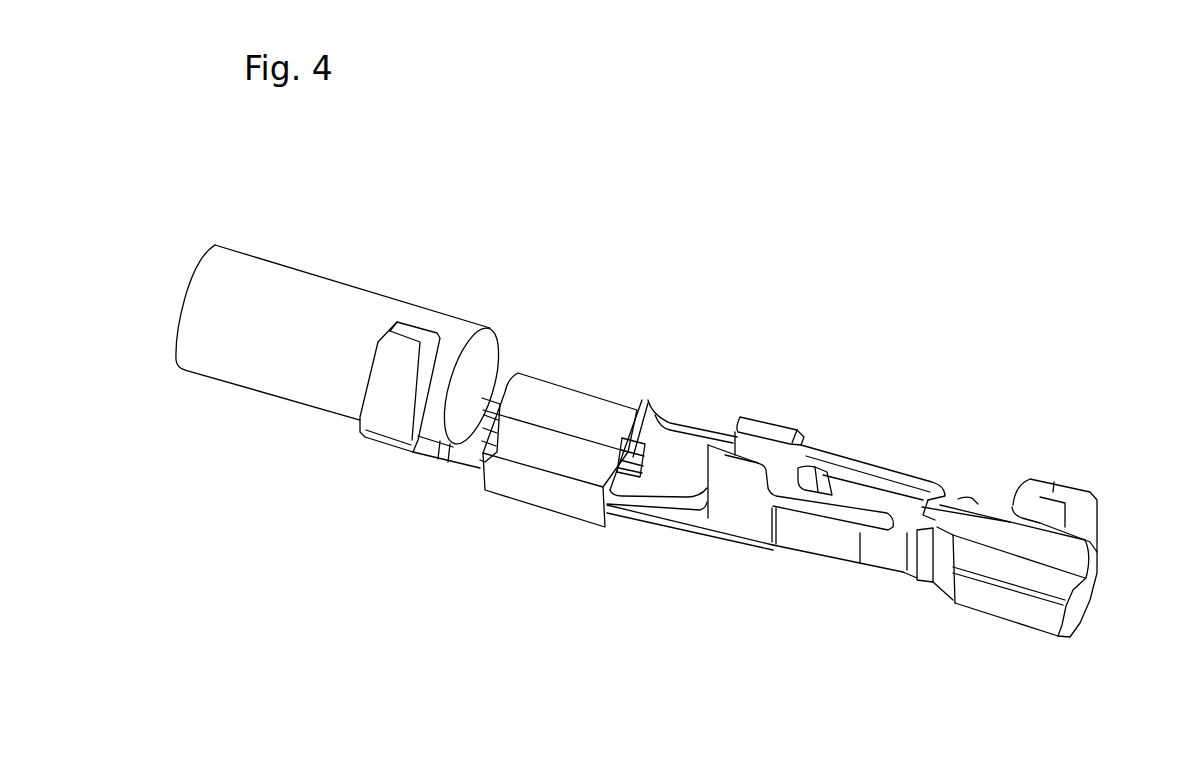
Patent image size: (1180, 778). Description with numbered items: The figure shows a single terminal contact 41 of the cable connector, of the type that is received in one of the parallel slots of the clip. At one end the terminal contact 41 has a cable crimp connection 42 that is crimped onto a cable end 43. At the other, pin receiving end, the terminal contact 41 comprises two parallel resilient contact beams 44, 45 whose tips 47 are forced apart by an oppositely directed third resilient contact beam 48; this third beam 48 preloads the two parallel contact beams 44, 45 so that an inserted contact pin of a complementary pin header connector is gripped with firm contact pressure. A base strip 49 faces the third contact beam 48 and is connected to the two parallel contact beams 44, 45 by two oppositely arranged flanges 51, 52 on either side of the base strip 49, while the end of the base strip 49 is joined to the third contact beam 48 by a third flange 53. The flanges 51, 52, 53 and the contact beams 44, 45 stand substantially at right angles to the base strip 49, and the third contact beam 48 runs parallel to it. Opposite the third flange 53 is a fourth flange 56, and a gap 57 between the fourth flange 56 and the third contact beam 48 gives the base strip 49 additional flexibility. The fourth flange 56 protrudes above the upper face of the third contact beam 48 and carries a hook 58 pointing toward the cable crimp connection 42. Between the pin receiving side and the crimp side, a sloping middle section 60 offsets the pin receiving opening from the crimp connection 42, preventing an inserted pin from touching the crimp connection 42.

The terminal contact 41 is at (953, 288).
The cable crimp connection 42 is at (574, 412).
The cable end 43 is at (292, 292).
The resilient contact beam 44 is at (821, 452).
The resilient contact beam 45 is at (848, 527).
The tips 47 is at (897, 527).
The third resilient contact beam 48 is at (873, 492).
The base strip 49 is at (942, 573).
The flange 51 is at (752, 418).
The flange 52 is at (728, 491).
The third flange 53 is at (1000, 597).
The fourth flange 56 is at (1058, 492).
The gap 57 is at (1072, 525).
The hook 58 is at (1022, 498).
The sloping middle section 60 is at (682, 453).